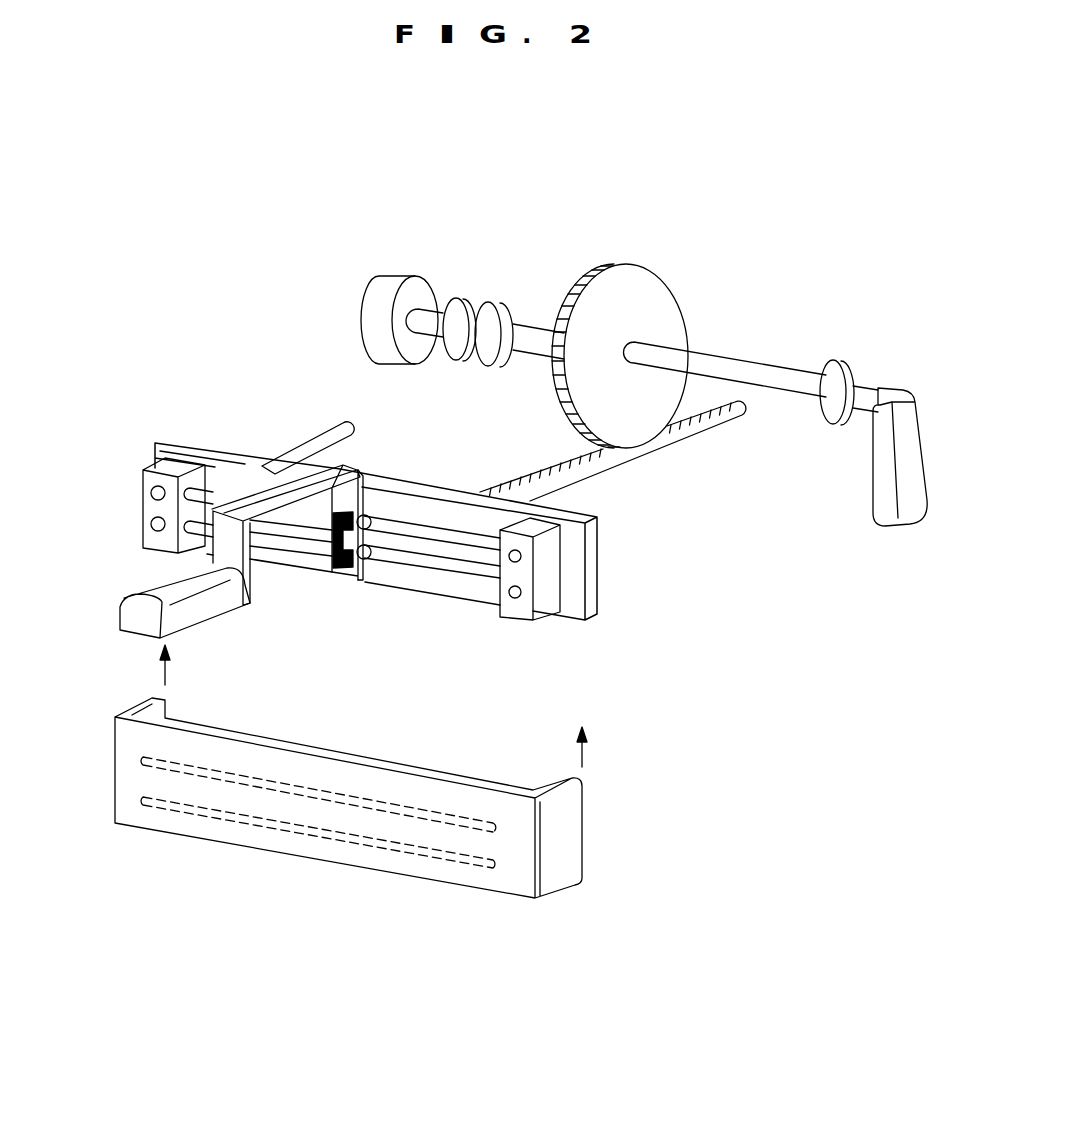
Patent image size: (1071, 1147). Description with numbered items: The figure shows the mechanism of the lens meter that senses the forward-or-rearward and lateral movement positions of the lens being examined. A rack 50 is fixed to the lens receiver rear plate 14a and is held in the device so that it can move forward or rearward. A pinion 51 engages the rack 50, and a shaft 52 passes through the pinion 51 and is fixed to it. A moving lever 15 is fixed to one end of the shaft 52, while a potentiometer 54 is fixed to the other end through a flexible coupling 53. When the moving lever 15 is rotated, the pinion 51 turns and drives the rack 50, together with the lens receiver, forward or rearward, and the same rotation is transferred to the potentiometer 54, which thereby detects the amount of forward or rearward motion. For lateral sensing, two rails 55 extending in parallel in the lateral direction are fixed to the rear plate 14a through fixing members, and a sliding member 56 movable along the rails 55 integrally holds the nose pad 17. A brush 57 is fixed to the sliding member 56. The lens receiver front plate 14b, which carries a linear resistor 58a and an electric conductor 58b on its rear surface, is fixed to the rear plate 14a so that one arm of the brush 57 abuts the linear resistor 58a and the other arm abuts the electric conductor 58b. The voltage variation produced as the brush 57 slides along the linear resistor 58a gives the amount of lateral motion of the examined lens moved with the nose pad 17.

The lens receiver rear plate 14a is at (572, 578).
The lens receiver front plate 14b is at (562, 837).
The moving lever 15 is at (878, 400).
The nose pad 17 is at (153, 593).
The rack 50 is at (603, 473).
The pinion 51 is at (632, 312).
The shaft 52 is at (727, 372).
The flexible coupling 53 is at (497, 313).
The potentiometer 54 is at (392, 285).
The rails 55 is at (428, 535).
The sliding member 56 is at (365, 547).
The brush 57 is at (335, 563).
The linear resistor 58a is at (445, 860).
The electric conductor 58b is at (407, 813).